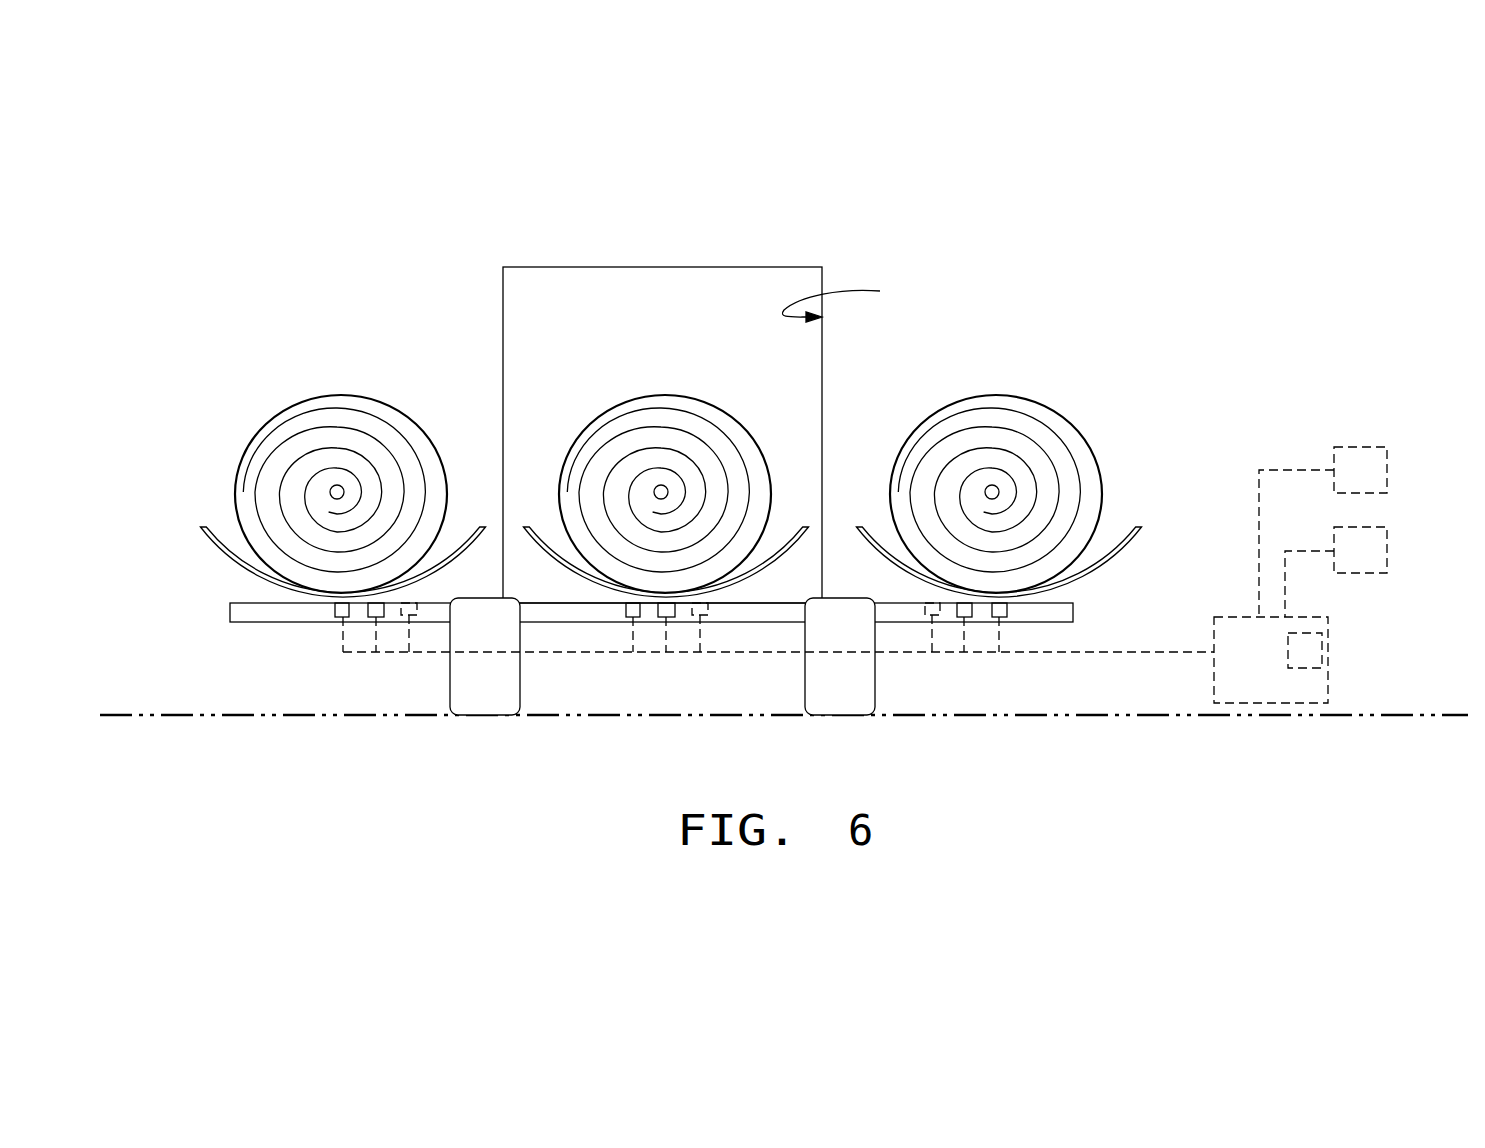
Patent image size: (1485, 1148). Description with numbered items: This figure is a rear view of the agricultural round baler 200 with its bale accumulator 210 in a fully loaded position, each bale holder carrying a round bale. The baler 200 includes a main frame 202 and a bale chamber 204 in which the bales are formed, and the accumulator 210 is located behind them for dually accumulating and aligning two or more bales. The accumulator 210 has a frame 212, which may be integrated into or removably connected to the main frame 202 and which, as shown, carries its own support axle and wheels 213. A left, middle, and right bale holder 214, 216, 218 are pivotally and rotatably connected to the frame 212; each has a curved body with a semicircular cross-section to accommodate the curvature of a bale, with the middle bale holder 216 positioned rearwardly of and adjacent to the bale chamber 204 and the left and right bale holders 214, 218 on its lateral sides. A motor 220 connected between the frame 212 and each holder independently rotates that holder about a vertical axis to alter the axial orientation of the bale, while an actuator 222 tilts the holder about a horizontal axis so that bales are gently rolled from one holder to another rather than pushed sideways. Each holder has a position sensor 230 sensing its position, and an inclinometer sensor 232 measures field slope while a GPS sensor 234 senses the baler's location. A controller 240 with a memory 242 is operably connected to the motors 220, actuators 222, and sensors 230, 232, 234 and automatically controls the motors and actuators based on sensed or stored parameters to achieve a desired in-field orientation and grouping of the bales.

The agricultural round baler 200 is at (928, 228).
The main frame 202 is at (722, 267).
The bale chamber 204 is at (851, 297).
The bale accumulator 210 is at (276, 373).
The frame 212 is at (245, 622).
The support axle and wheels 213 is at (485, 705).
The left bale holder 214 is at (208, 528).
The middle bale holder 216 is at (790, 548).
The right bale holder 218 is at (1123, 537).
The motor 220 is at (337, 617).
The actuator 222 is at (375, 620).
The position sensor 230 is at (406, 617).
The inclinometer sensor 232 is at (1358, 447).
The GPS sensor 234 is at (1370, 573).
The controller 240 is at (1214, 684).
The memory 242 is at (1322, 656).